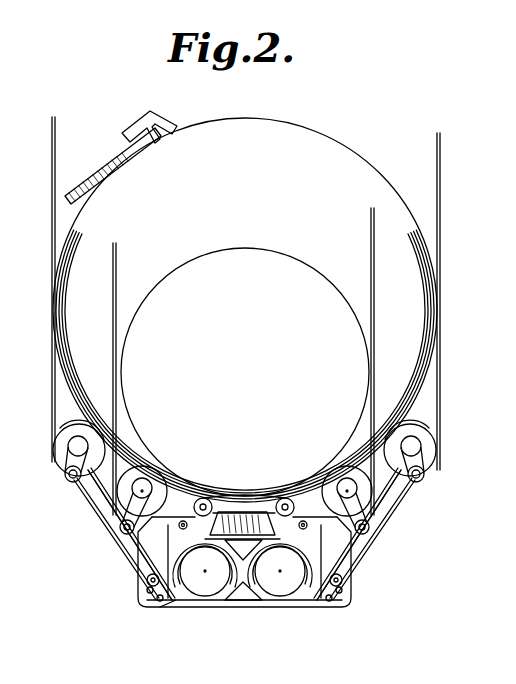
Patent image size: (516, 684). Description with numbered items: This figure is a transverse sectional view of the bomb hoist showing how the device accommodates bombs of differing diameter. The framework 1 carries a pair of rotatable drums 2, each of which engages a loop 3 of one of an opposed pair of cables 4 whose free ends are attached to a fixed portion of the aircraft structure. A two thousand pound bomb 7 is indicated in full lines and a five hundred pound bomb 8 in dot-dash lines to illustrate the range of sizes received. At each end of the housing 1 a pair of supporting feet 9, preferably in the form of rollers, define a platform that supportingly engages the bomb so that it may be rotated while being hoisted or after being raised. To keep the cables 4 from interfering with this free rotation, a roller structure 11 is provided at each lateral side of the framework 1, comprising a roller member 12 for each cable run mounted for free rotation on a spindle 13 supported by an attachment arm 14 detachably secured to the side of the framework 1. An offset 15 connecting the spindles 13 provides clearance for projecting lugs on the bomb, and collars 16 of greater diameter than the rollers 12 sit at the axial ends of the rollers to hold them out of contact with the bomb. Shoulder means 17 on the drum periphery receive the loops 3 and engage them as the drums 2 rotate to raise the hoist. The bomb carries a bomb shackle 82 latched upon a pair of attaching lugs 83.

The framework 1 is at (243, 614).
The rotatable drums 2 is at (213, 596).
The loop 3 is at (183, 598).
The cables 4 is at (441, 221).
The 2,000 pound bomb 7 is at (333, 160).
The 500 pound bomb 8 is at (293, 250).
The supporting feet 9 is at (238, 496).
The roller structure 11 is at (53, 483).
The roller member 12 is at (64, 440).
The spindle 13 is at (72, 452).
The attachment arm 14 is at (97, 490).
The offset 15 is at (63, 474).
The collars 16 is at (68, 430).
The shoulder means 17 is at (172, 600).
The bomb shackle 82 is at (110, 158).
The attaching lugs 83 is at (166, 122).